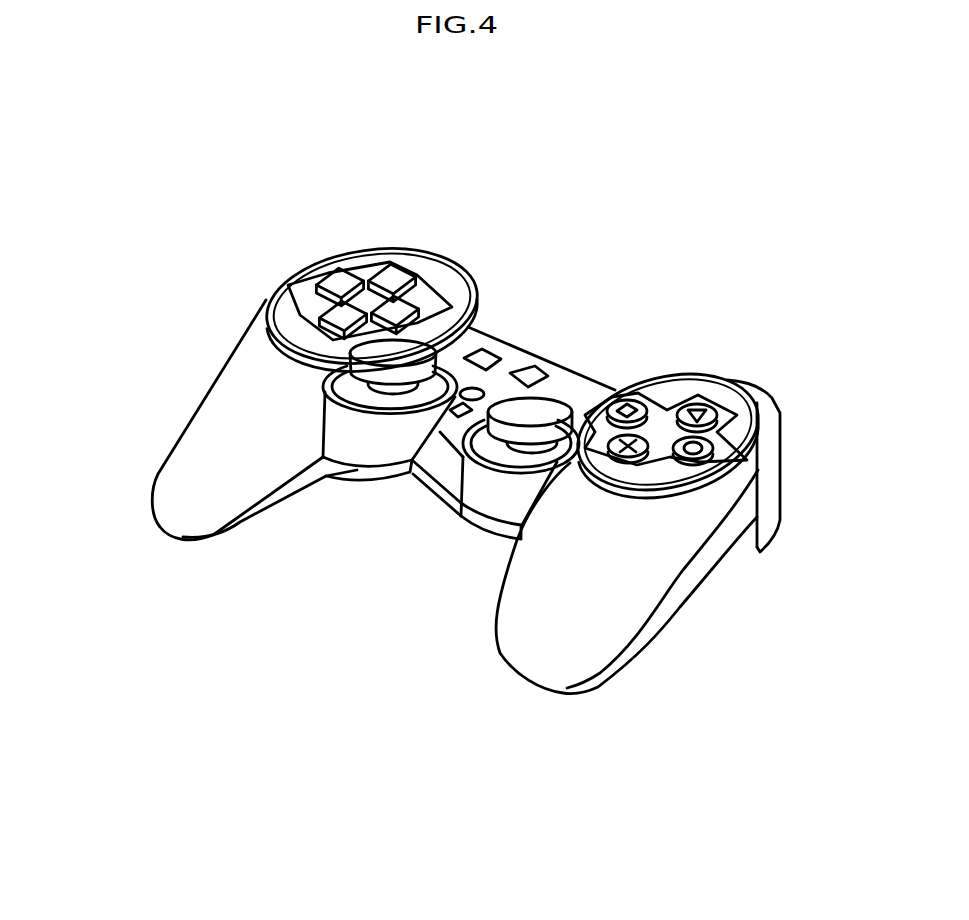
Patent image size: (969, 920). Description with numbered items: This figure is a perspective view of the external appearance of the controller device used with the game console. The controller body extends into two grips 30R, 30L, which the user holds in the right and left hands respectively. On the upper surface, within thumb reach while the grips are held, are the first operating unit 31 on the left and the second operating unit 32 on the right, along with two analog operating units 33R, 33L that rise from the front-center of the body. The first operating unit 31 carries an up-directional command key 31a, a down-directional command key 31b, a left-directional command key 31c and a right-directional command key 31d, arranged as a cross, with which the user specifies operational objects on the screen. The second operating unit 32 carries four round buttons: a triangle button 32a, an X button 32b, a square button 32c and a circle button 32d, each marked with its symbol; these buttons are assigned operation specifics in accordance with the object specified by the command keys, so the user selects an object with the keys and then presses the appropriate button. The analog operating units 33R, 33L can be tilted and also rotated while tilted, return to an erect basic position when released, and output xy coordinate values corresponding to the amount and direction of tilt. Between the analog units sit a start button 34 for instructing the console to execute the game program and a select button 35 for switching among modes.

The grip 30L is at (210, 498).
The grip 30R is at (573, 643).
The first operating unit 31 is at (357, 250).
The up-directional command key 31a is at (391, 283).
The down-directional command key 31b is at (342, 320).
The left-directional command key 31c is at (339, 287).
The right-directional command key 31d is at (394, 315).
The second operating unit 32 is at (727, 503).
The triangle button 32a is at (697, 418).
The X button 32b is at (628, 449).
The square button 32c is at (627, 414).
The circle button 32d is at (693, 451).
The analog operating unit 33L is at (388, 370).
The analog operating unit 33R is at (521, 433).
The start button 34 is at (527, 378).
The select button 35 is at (484, 360).